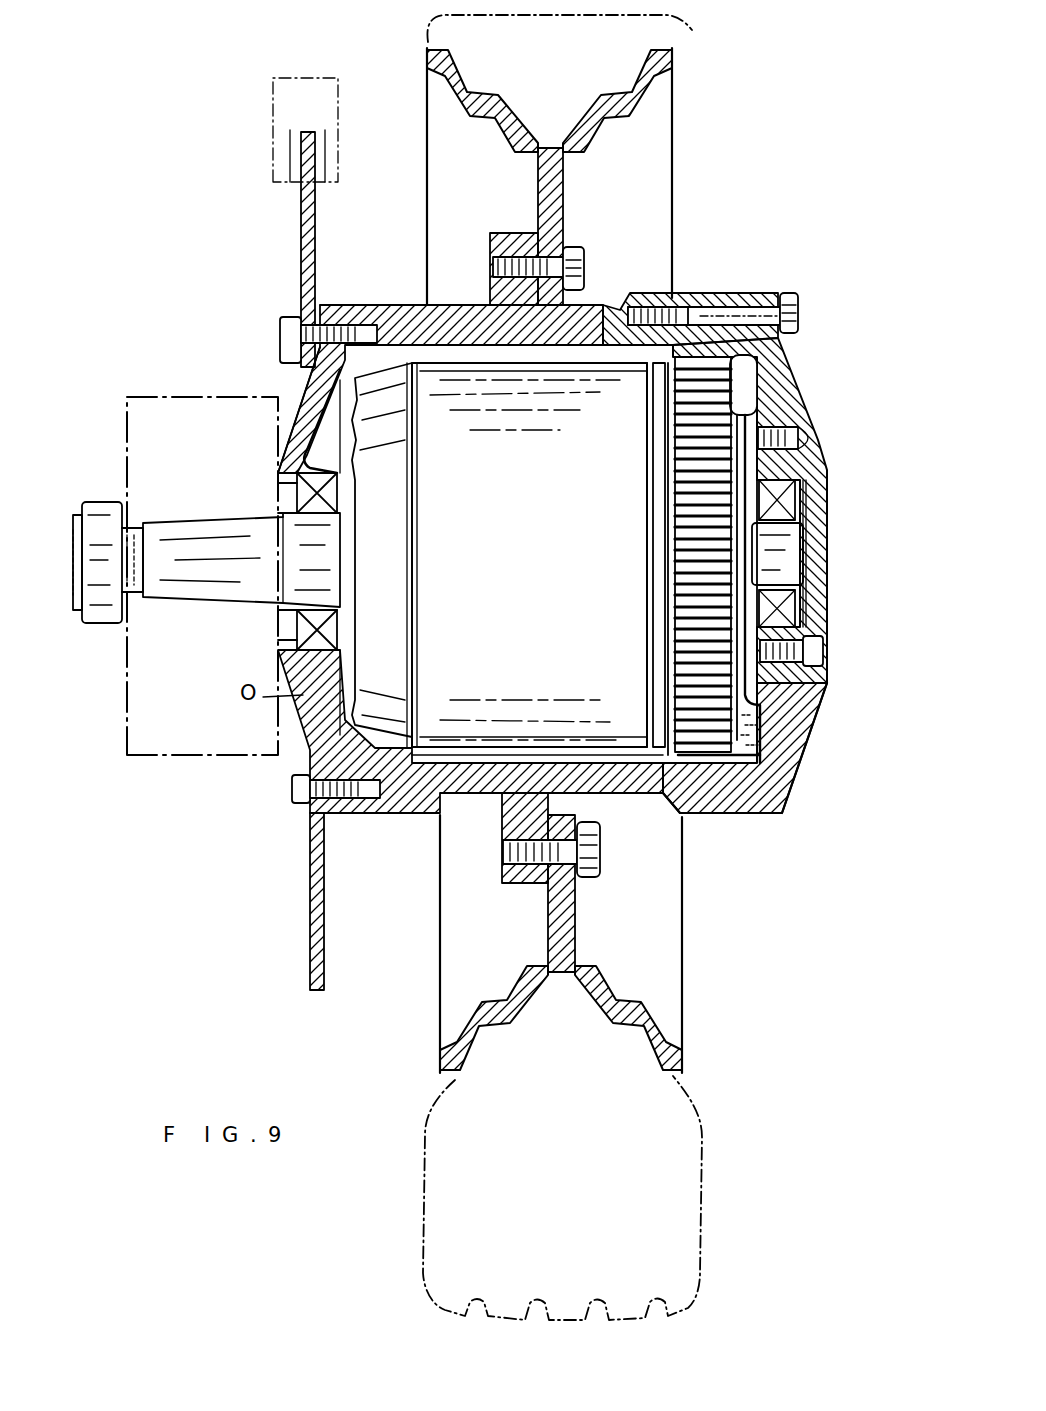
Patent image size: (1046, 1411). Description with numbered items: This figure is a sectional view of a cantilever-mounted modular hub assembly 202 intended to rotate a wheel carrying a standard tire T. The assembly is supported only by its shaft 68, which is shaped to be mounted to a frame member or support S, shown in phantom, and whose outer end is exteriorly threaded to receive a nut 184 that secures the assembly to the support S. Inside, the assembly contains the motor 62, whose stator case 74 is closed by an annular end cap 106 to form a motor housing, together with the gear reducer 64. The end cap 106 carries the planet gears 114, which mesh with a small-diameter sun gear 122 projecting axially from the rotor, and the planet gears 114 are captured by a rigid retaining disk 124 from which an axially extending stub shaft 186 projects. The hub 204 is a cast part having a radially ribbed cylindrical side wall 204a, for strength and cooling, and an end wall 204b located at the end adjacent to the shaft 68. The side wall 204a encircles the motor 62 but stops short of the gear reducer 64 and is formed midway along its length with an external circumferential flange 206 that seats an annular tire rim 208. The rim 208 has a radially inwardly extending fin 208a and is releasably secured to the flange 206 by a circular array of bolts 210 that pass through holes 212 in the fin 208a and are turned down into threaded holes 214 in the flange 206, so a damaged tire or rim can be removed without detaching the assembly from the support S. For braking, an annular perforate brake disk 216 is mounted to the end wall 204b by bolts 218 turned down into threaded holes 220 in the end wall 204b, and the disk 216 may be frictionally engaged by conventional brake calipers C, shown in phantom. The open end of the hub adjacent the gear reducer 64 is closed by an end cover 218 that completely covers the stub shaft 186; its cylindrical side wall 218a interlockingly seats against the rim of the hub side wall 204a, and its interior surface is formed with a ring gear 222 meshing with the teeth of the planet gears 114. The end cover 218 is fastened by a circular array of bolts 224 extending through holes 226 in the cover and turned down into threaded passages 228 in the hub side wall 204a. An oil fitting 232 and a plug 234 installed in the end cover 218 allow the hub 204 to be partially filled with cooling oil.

The motor 62 is at (457, 358).
The gear reducer 64 is at (692, 296).
The shaft 68 is at (215, 600).
The stator case 74 is at (545, 530).
The end cap 106 is at (655, 490).
The planet gears 114 is at (762, 745).
The sun gear 122 is at (680, 557).
The retaining disk 124 is at (782, 700).
The nut 184 is at (120, 628).
The stub shaft 186 is at (802, 542).
The modular hub assembly 202 is at (206, 140).
The hub 204 is at (787, 814).
The cylindrical side wall 204a is at (686, 824).
The end wall 204b is at (292, 452).
The external circumferential flange 206 is at (494, 240).
The tire rim 208 is at (585, 100).
The fin 208a is at (565, 207).
The bolts 210 is at (594, 847).
The holes 212 is at (600, 864).
The threaded holes 214 is at (520, 872).
The brake disk 216 is at (310, 930).
The end cover 218 is at (282, 334).
The cylindrical side wall 218a is at (770, 298).
The threaded holes 220 is at (348, 306).
The ring gear 222 is at (793, 778).
The bolts 224 is at (797, 318).
The holes 226 is at (732, 306).
The threaded passages 228 is at (640, 303).
The oil fitting 232 is at (808, 436).
The plug 234 is at (812, 652).
The tire T is at (692, 30).
The brake calipers C is at (265, 106).
The support S is at (118, 466).